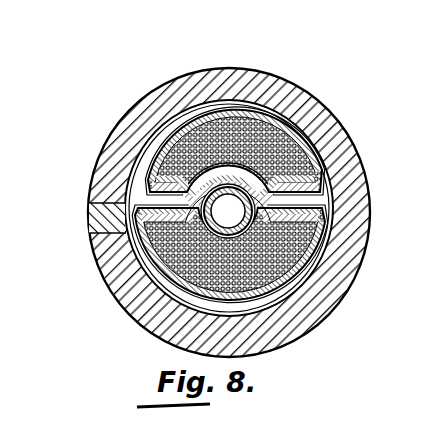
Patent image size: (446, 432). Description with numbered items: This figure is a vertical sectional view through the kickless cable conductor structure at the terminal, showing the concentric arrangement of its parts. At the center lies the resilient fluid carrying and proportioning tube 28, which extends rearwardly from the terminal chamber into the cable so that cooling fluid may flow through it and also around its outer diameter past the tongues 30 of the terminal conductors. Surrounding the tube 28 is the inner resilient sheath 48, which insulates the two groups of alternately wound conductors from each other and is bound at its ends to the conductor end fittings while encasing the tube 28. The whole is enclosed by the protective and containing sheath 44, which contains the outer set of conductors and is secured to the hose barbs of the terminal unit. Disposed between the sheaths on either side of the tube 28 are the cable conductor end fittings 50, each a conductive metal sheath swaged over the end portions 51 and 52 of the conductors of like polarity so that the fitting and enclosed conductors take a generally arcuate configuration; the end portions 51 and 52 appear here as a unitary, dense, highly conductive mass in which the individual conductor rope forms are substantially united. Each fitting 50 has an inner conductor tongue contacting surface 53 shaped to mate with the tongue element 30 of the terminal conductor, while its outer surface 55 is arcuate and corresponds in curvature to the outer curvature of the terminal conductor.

The fluid carrying and proportioning tube 28 is at (234, 193).
The tongue element 30 is at (193, 208).
The protective and containing sheath 44 is at (214, 212).
The inner resilient sheath 48 is at (125, 233).
The cable conductor end fitting 50 is at (254, 175).
The end portion of conductors 51 is at (186, 128).
The end portion of conductors 52 is at (226, 263).
The inner conductor tongue contacting surface 53 is at (235, 151).
The outer surface of end fitting 55 is at (150, 196).